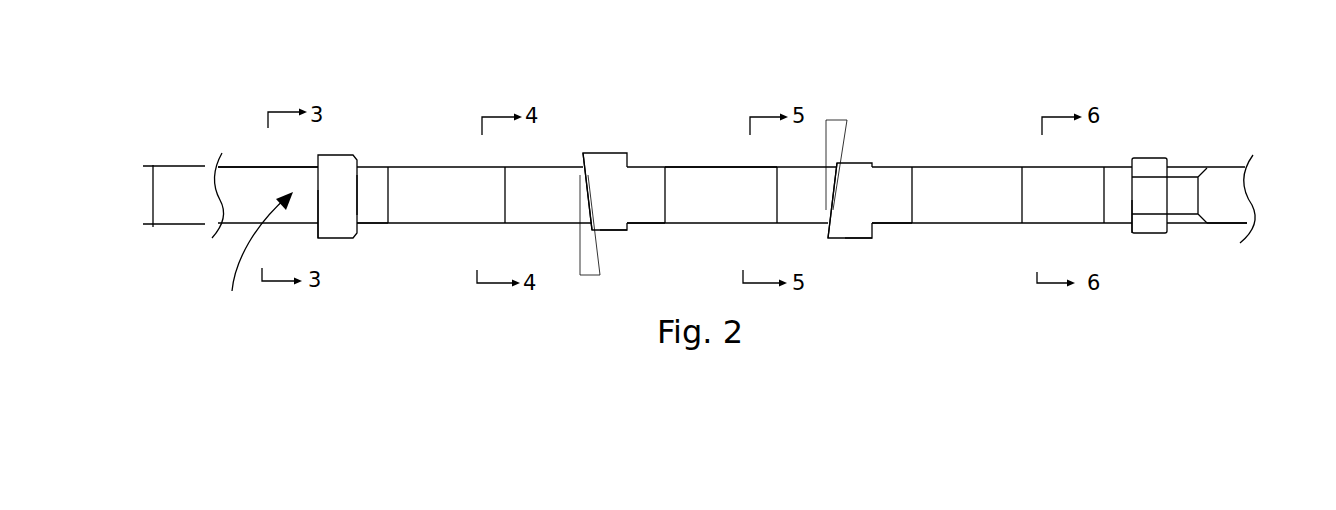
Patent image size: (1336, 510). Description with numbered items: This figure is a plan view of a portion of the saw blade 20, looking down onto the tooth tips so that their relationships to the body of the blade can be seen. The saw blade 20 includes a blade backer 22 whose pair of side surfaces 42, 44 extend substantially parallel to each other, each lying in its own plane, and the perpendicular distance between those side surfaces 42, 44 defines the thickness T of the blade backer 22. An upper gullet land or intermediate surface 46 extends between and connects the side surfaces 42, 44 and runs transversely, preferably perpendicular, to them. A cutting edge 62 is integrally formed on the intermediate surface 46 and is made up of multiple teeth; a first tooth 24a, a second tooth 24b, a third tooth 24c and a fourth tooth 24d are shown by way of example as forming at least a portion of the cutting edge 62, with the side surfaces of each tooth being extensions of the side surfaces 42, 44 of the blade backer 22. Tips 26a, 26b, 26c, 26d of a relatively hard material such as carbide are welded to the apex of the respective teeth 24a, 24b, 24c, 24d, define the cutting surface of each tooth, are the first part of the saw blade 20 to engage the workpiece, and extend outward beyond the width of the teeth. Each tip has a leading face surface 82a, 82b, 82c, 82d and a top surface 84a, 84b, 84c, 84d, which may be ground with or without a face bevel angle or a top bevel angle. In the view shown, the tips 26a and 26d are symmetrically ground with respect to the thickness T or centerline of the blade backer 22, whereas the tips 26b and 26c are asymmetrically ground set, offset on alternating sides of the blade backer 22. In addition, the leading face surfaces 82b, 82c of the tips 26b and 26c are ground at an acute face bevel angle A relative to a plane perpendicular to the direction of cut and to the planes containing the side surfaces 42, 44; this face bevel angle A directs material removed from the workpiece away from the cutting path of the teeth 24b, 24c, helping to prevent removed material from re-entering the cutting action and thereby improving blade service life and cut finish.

The saw blade 20 is at (228, 121).
The blade backer 22 is at (938, 178).
The first tooth 24a is at (374, 228).
The second tooth 24b is at (631, 226).
The third tooth 24c is at (893, 222).
The fourth tooth 24d is at (1222, 222).
The tip 26a is at (327, 160).
The tip 26b is at (594, 160).
The tip 26c is at (851, 172).
The tip 26d is at (1143, 167).
The side surface 42 is at (242, 165).
The side surface 44 is at (232, 227).
The intermediate surface 46 is at (749, 193).
The cutting edge 62 is at (260, 252).
The leading face surface 82a is at (318, 209).
The leading face surface 82b is at (587, 203).
The leading face surface 82c is at (826, 230).
The leading face surface 82d is at (1130, 212).
The top surface 84a is at (345, 187).
The top surface 84b is at (607, 212).
The top surface 84c is at (856, 208).
The top surface 84d is at (1178, 188).
The thickness T is at (153, 193).
The face bevel angle A is at (589, 275).